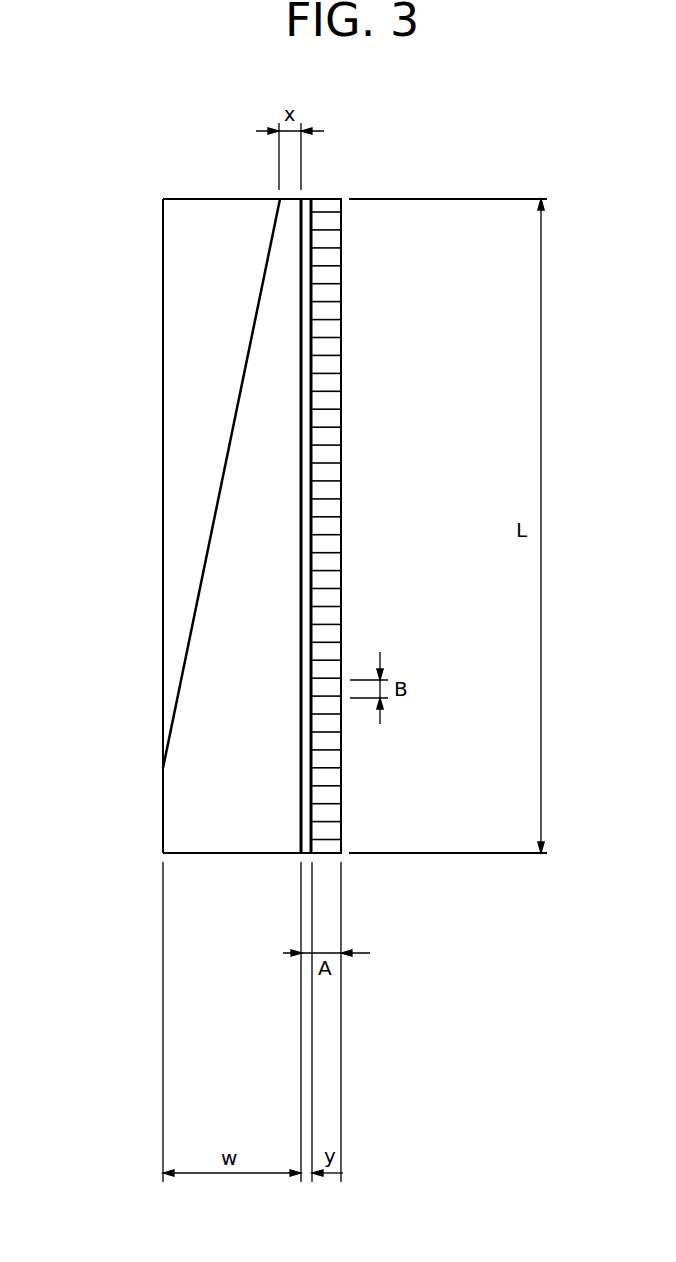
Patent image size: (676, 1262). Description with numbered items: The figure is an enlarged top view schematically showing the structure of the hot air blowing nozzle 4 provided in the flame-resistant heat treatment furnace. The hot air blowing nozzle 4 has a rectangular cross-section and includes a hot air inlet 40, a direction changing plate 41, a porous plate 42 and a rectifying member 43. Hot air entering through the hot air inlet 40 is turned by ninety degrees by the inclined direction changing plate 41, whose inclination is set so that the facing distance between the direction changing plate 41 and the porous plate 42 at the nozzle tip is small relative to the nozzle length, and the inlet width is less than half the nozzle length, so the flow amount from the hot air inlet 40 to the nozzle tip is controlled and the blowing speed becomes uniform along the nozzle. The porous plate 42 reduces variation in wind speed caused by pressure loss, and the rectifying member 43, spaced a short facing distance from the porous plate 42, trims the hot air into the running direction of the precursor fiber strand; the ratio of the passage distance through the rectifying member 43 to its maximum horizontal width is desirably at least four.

The hot air blowing nozzle 4 is at (303, 532).
The hot air inlet 40 is at (218, 853).
The direction changing plate 41 is at (235, 407).
The porous plate 42 is at (297, 790).
The rectifying member 43 is at (343, 368).